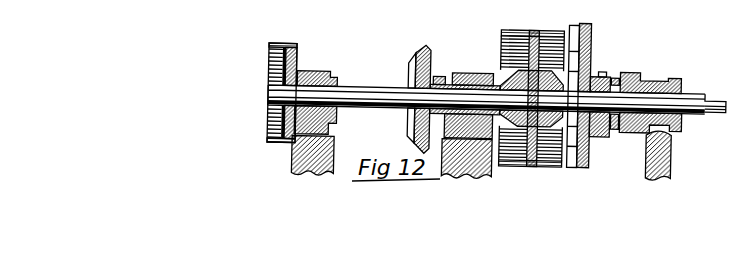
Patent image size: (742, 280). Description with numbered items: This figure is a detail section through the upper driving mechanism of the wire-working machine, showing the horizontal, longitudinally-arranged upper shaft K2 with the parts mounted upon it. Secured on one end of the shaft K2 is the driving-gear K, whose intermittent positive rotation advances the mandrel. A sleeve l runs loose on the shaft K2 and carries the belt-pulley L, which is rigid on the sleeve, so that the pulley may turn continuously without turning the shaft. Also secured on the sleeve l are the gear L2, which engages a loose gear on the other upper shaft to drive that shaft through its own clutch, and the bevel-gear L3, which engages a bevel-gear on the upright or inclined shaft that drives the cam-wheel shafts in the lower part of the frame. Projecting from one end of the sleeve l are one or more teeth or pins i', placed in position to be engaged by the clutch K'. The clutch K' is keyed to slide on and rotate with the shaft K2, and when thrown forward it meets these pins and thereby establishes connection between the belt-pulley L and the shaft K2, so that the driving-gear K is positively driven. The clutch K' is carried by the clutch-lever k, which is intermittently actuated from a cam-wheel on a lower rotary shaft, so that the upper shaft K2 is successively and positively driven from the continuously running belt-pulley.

The driving-gear K is at (287, 82).
The clutch K' is at (651, 92).
The upper shaft K2 is at (716, 92).
The clutch-lever k is at (663, 156).
The belt-pulley L is at (532, 90).
The gear L2 is at (589, 89).
The bevel-gear L3 is at (419, 87).
The sleeve l is at (446, 108).
The small collar i' is at (613, 114).